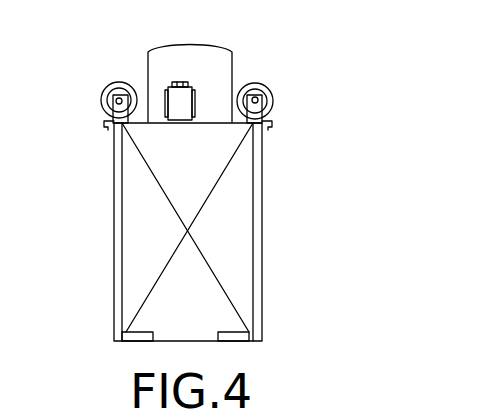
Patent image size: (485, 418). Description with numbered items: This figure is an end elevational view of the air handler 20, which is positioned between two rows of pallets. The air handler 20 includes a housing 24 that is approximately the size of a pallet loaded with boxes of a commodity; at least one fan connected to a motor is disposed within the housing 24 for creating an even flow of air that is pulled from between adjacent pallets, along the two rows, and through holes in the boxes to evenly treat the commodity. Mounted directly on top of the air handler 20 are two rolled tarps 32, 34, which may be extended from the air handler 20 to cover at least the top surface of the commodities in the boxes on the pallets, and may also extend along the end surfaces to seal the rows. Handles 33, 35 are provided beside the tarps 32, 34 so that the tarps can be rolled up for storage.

The air handler 20 is at (290, 96).
The housing 24 is at (262, 222).
The tarp 32 is at (110, 91).
The handle 33 is at (106, 126).
The tarp 34 is at (264, 82).
The handle 35 is at (272, 126).